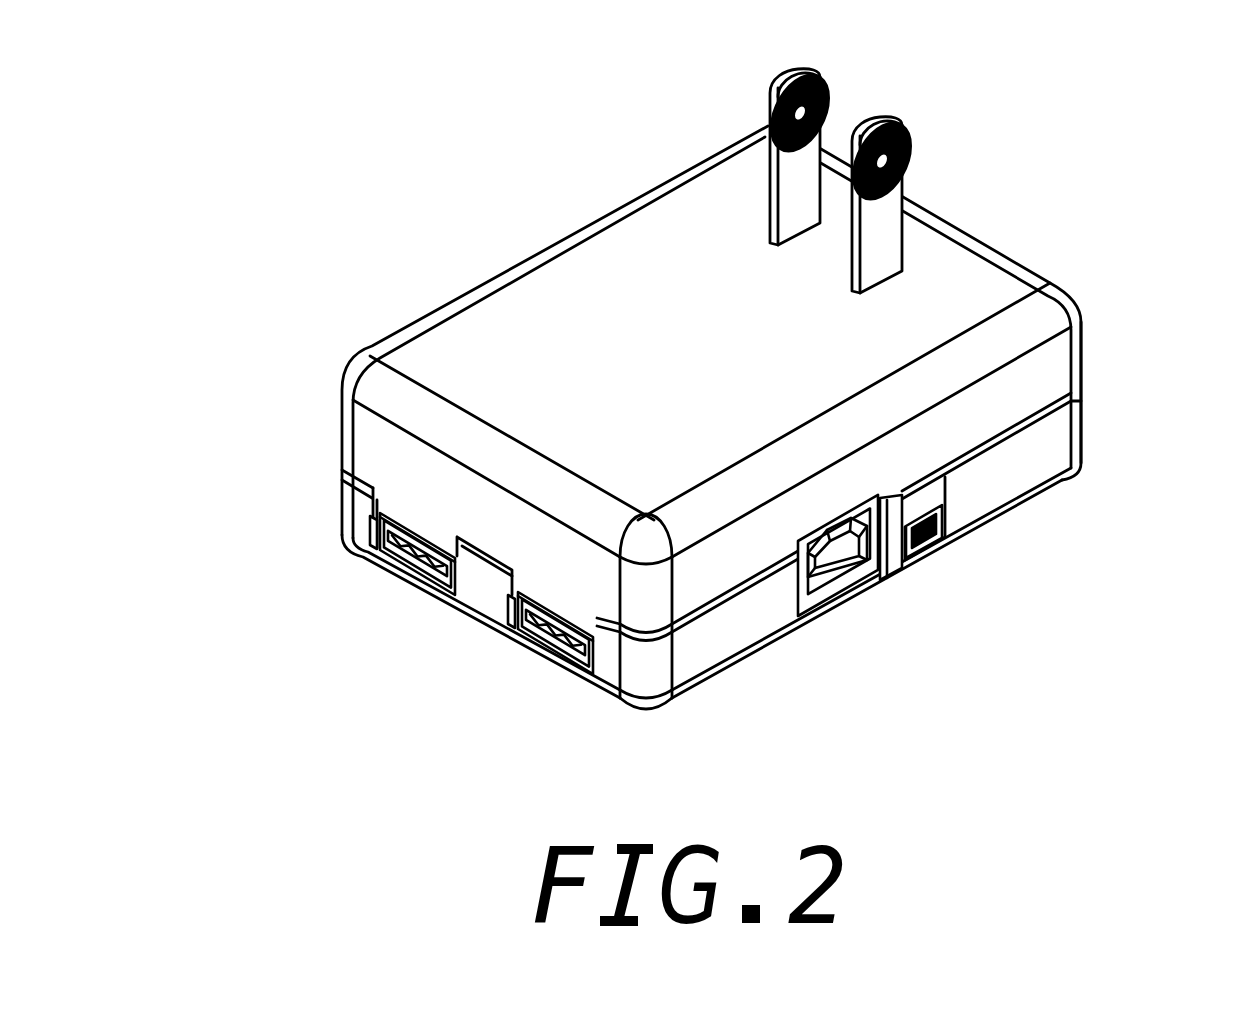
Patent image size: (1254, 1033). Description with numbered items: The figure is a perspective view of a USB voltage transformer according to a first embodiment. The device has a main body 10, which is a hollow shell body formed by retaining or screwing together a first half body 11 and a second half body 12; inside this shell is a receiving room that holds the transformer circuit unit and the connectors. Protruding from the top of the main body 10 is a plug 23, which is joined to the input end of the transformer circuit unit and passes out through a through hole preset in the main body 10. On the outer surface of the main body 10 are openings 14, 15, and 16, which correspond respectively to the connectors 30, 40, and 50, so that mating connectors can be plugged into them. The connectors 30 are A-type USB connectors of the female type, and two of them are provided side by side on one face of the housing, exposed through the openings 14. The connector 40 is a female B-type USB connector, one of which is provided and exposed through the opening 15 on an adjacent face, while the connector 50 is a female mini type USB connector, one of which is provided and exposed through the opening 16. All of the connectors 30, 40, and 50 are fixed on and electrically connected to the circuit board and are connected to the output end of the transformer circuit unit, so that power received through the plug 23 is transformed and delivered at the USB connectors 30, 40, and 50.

The main body 10 is at (522, 204).
The first half body 11 is at (738, 637).
The second half body 12 is at (1042, 313).
The opening 14 is at (550, 600).
The opening 15 is at (799, 622).
The opening 16 is at (947, 513).
The plug 23 is at (902, 130).
The A-type USB connector 30 is at (417, 580).
The B-type USB connector 40 is at (842, 575).
The mini type USB connector 50 is at (947, 540).